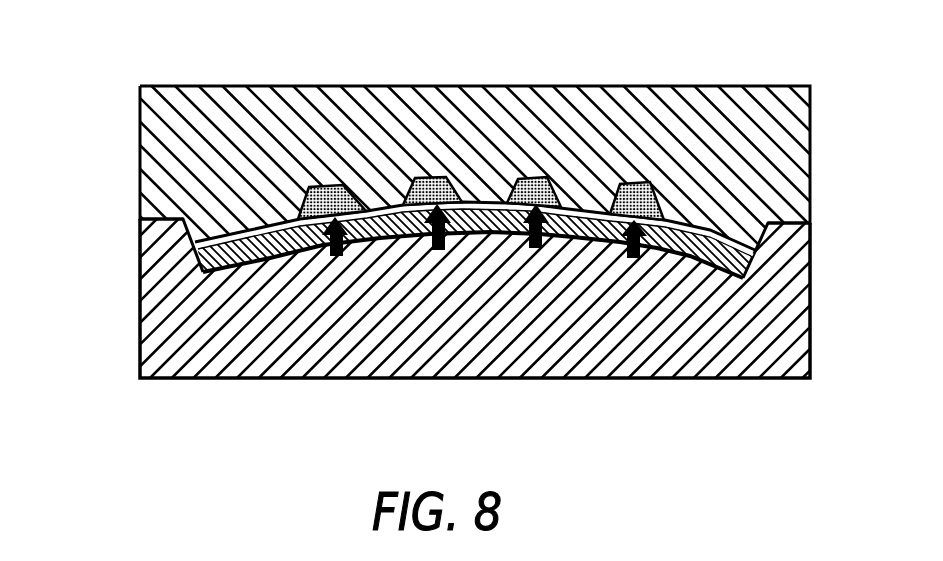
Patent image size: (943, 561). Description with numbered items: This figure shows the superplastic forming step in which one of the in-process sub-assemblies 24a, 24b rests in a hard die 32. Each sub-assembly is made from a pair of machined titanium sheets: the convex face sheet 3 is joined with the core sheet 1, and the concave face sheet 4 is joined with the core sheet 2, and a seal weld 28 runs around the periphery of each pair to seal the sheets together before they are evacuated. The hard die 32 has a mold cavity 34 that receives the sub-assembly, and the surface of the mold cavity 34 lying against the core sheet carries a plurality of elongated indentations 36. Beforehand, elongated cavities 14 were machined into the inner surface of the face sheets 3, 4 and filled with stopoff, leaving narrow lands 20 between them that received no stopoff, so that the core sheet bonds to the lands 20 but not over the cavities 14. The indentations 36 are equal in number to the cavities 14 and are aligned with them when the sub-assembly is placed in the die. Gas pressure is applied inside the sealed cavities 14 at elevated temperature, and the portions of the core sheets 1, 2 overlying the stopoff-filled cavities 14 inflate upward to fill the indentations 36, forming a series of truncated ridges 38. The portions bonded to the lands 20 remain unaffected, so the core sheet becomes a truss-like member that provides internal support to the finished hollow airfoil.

The core sheet 1 is at (434, 164).
The core sheet 2 is at (434, 164).
The face sheet 3 is at (434, 164).
The face sheet 4 is at (434, 164).
The cavities 14 is at (434, 164).
The lands 20 is at (434, 232).
The sub-assembly 24a is at (434, 246).
The sub-assembly 24b is at (200, 258).
The seal weld 28 is at (750, 262).
The hard die 32 is at (237, 352).
The mold cavity 34 is at (210, 228).
The indentations 36 is at (525, 178).
The truncated ridges 38 is at (308, 182).